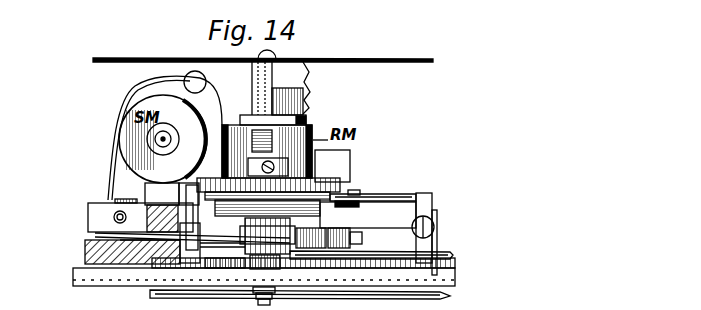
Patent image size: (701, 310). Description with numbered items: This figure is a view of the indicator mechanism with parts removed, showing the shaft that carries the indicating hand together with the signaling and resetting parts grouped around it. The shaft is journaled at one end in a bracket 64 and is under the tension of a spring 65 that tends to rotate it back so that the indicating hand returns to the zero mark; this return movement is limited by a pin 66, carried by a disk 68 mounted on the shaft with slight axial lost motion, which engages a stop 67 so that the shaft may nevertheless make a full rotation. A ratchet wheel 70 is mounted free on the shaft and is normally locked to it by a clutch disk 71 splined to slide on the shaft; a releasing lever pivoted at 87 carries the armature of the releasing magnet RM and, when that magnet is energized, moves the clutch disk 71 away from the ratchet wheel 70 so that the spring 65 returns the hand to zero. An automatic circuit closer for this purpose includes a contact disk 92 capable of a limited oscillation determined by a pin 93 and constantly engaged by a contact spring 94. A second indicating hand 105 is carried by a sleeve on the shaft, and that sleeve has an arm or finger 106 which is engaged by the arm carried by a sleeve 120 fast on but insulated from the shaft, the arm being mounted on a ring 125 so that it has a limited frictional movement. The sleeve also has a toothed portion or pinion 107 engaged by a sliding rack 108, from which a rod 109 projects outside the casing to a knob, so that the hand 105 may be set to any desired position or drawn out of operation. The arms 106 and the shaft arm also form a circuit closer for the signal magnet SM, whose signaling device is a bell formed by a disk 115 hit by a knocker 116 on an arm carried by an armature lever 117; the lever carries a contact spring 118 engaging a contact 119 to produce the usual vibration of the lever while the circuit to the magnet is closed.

The disk 115 is at (178, 58).
The knocker 116 is at (213, 76).
The disk 68 is at (250, 88).
The bracket 64 is at (287, 101).
The stop 67 is at (306, 110).
The pin 66 is at (307, 120).
The spring 65 is at (332, 166).
The ratchet wheel 70 is at (332, 181).
The clutch disk 71 is at (199, 217).
The contact disk 92 is at (352, 193).
The contact spring 94 is at (373, 193).
The pin 93 is at (356, 203).
The rod 109 is at (438, 256).
The armature lever 117 is at (88, 215).
The contact spring 118 is at (96, 234).
The contact 119 is at (148, 254).
The sleeve 120 is at (246, 228).
The arm or finger 106 is at (300, 232).
The sliding rack 108 is at (200, 262).
The pivot 87 is at (235, 260).
The ring 125 is at (265, 262).
The toothed portion or pinion 107 is at (272, 268).
The second indicating hand 105 is at (432, 294).